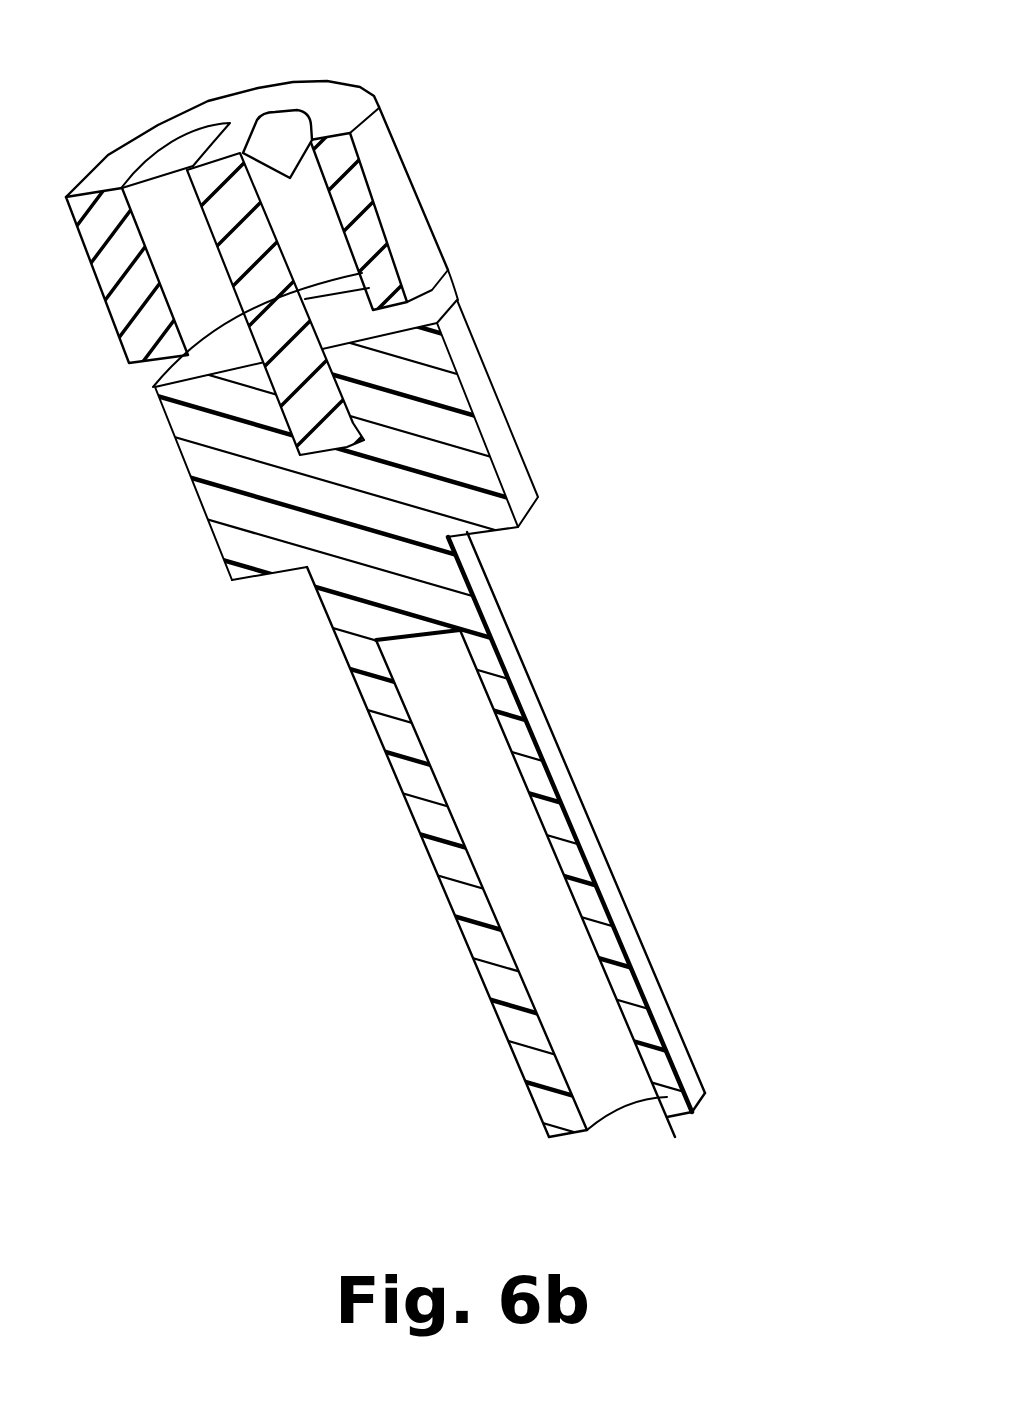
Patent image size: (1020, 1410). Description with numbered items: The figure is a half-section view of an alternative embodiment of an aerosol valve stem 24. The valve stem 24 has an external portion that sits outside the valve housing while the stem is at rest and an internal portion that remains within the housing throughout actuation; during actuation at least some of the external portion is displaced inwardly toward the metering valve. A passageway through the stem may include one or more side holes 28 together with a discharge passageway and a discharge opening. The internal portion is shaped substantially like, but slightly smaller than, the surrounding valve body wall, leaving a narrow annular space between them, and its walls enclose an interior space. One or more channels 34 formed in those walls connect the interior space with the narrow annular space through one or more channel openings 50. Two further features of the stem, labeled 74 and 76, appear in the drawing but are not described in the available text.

The valve stem 24 is at (793, 652).
The side holes 28 is at (511, 753).
The channels 34 is at (405, 318).
The channel openings 50 is at (449, 278).
The key pin 74 is at (308, 436).
The rounded boss 76 is at (268, 160).